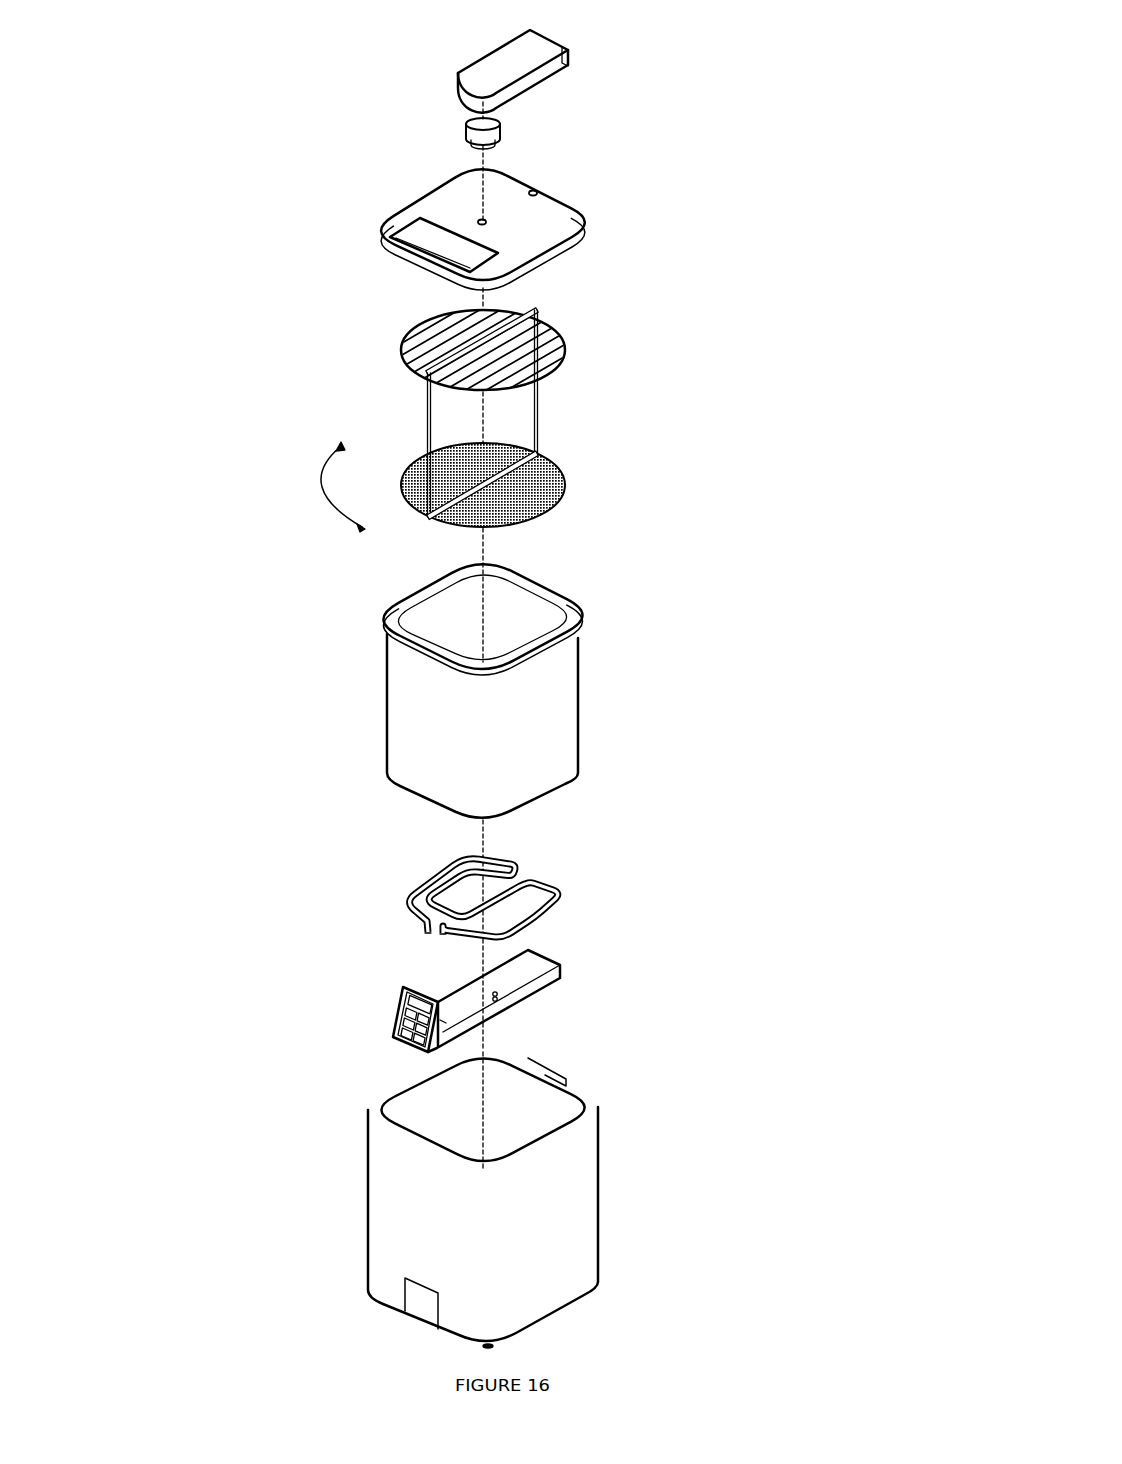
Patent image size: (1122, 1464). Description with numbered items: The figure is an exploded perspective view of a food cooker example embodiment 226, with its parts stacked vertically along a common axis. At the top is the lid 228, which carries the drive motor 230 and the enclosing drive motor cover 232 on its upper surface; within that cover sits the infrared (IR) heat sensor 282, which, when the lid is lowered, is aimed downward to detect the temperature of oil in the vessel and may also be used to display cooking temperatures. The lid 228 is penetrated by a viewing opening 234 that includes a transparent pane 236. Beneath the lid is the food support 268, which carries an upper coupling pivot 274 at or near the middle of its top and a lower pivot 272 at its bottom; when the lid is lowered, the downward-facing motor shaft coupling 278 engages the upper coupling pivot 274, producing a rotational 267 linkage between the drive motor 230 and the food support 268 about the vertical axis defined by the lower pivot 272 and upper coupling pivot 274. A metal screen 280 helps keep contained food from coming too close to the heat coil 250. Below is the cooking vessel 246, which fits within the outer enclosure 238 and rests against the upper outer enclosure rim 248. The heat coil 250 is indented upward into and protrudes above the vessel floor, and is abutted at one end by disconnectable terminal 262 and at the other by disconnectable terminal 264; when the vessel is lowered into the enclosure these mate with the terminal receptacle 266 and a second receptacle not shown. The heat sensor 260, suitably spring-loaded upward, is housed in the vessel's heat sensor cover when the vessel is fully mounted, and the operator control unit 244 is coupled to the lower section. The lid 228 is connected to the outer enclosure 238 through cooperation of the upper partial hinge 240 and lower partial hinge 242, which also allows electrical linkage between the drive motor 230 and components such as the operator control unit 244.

The example embodiment 226 is at (728, 247).
The lid 228 is at (555, 217).
The drive motor 230 is at (465, 130).
The enclosing drive motor cover 232 is at (492, 72).
The viewing opening 234 is at (447, 243).
The transparent pane 236 is at (443, 243).
The outer enclosure 238 is at (563, 1162).
The upper partial hinge 240 is at (570, 63).
The lower partial hinge 242 is at (565, 1077).
The operator control unit 244 is at (405, 1020).
The cooking vessel 246 is at (433, 713).
The upper outer enclosure rim 248 is at (395, 1088).
The heat coil 250 is at (412, 883).
The heat sensor 260 is at (497, 994).
The disconnectable terminal 262 is at (447, 935).
The disconnectable terminal 264 is at (430, 930).
The terminal receptacle 266 is at (442, 1022).
The rotational linkage 267 is at (323, 490).
The food support 268 is at (537, 427).
The lower pivot 272 is at (563, 480).
The upper coupling pivot 274 is at (483, 342).
The motor shaft coupling 278 is at (482, 146).
The metal screen 280 is at (537, 513).
The infrared (IR) heat sensor 282 is at (538, 192).